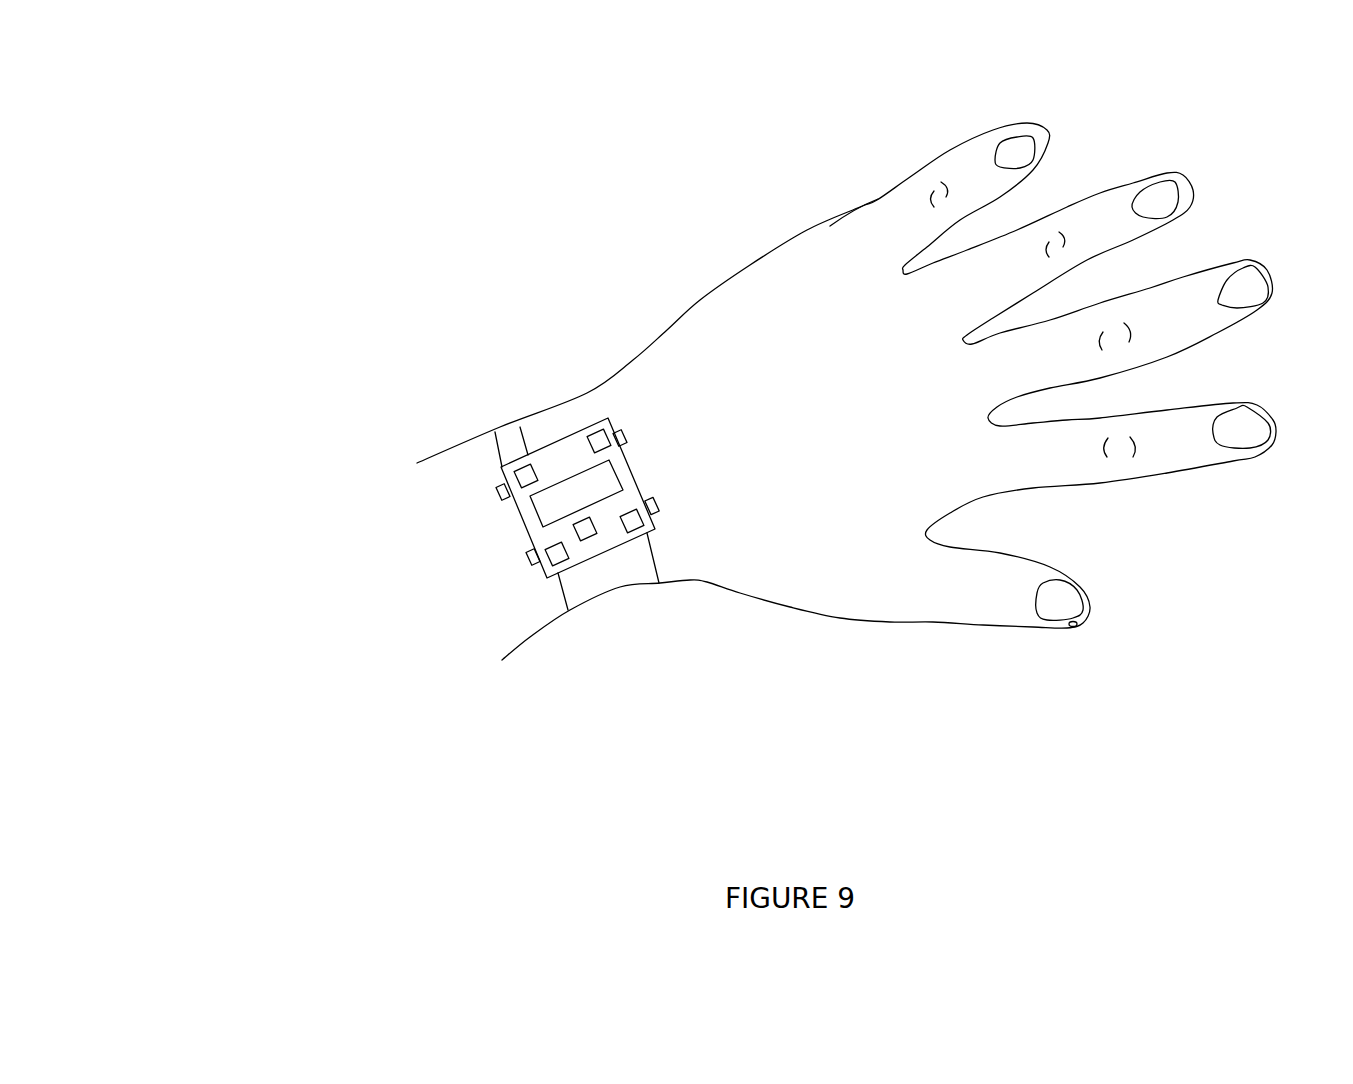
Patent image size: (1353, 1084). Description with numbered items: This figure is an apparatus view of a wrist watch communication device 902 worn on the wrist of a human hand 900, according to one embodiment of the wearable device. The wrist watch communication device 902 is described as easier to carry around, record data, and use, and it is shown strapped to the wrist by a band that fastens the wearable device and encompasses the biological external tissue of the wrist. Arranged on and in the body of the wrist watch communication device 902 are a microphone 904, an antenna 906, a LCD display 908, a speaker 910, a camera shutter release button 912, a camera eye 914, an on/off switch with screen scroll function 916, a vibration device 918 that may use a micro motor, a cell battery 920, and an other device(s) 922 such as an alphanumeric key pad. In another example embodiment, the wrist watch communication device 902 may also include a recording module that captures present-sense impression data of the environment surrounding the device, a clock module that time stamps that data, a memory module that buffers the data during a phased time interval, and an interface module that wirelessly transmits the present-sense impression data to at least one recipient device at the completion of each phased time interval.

The human hand 900 is at (825, 222).
The wrist watch communication device 902 is at (520, 520).
The microphone 904 is at (590, 532).
The antenna 906 is at (520, 475).
The LCD display 908 is at (583, 477).
The speaker 910 is at (637, 523).
The camera shutter release button 912 is at (592, 443).
The camera eye 914 is at (627, 440).
The on/off switch with screen scroll function 916 is at (657, 500).
The vibration device 918 is at (420, 463).
The cell battery 920 is at (540, 570).
The other device(s) 922 is at (540, 560).